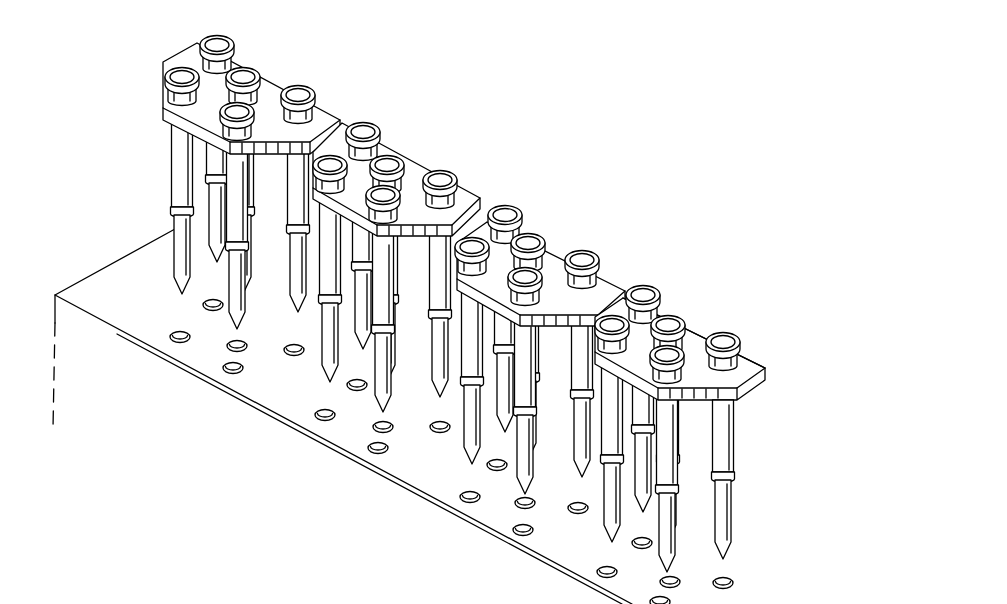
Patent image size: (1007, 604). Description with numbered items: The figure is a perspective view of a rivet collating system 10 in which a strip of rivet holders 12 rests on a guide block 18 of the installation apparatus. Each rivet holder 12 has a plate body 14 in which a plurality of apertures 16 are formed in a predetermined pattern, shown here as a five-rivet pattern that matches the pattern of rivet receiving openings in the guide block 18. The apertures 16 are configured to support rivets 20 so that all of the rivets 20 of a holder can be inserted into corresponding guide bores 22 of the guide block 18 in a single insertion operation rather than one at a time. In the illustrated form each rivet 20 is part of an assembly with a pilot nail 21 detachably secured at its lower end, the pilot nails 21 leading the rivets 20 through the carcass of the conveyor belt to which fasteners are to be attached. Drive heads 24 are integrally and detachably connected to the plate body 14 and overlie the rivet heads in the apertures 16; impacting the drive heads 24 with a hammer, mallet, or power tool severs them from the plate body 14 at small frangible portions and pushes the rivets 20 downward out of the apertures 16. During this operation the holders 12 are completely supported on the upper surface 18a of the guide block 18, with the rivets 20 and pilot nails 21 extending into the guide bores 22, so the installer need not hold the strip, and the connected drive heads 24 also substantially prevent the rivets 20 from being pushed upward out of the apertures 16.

The rivet collating system 10 is at (71, 63).
The rivet holder 12 is at (804, 341).
The plate body 14 is at (748, 382).
The apertures 16 is at (748, 355).
The guide block 18 is at (75, 338).
The upper surface of guide block 18a is at (113, 293).
The rivets 20 is at (770, 455).
The pilot nails 21 is at (732, 508).
The guide bores 22 is at (181, 338).
The drive heads 24 is at (692, 320).